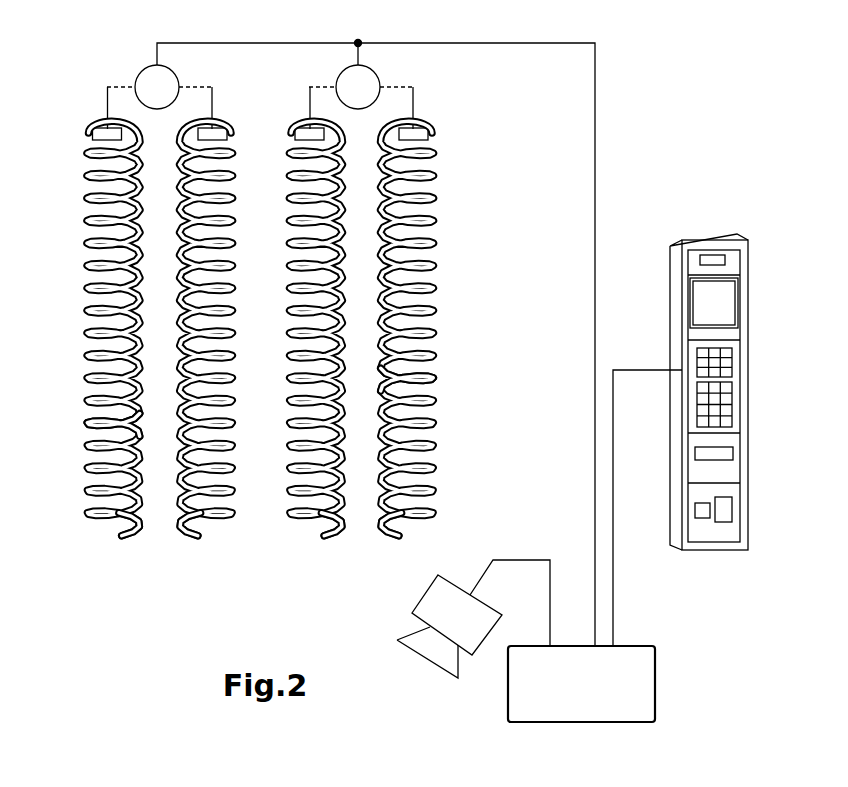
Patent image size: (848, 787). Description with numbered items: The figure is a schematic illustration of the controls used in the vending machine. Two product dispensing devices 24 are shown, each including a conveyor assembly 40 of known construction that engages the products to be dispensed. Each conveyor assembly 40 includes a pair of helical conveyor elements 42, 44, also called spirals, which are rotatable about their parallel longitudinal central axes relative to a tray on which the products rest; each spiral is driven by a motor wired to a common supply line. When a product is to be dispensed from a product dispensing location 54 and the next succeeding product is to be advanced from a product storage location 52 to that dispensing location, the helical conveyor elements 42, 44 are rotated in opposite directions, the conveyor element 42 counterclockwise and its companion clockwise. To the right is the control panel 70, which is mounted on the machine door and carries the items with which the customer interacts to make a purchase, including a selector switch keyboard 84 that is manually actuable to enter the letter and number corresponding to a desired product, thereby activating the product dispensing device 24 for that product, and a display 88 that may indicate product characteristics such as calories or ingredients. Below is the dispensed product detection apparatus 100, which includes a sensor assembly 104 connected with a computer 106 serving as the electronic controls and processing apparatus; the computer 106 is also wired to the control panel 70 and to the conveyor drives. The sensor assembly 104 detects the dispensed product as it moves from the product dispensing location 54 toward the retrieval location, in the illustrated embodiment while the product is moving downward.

The product dispensing device 24 is at (66, 140).
The conveyor assembly 40 is at (70, 338).
The product storage location 52 is at (85, 420).
The helical conveyor element 42 is at (101, 525).
The helical conveyor element 44 is at (221, 524).
The product dispensing location 54 is at (146, 558).
The control panel 70 is at (744, 392).
The display 88 is at (718, 298).
The selector switch keyboard 84 is at (732, 365).
The dispensed product detection apparatus 100 is at (476, 701).
The sensor assembly 104 is at (457, 617).
The computer 106 is at (648, 683).